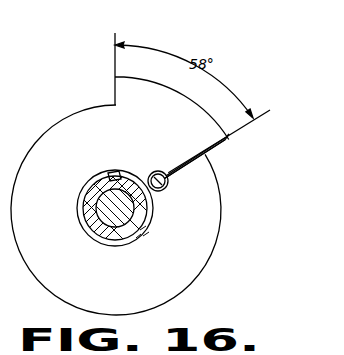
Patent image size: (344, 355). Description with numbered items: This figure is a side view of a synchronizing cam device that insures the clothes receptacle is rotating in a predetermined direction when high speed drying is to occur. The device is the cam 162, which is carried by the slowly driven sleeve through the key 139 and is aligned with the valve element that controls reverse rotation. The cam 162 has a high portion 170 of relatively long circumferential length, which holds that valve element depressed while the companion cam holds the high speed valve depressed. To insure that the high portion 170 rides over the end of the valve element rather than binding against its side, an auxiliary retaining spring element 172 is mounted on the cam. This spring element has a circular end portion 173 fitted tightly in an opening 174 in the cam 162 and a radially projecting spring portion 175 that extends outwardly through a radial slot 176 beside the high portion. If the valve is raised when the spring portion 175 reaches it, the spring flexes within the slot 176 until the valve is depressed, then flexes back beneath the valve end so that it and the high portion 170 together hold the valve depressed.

The cam 162 is at (202, 181).
The high portion 170 is at (171, 89).
The auxiliary retaining spring element 172 is at (229, 138).
The circular end portion 173 is at (167, 187).
The opening 174 is at (155, 171).
The radially projecting spring portion 175 is at (222, 144).
The radial slot 176 is at (201, 151).
The key 139 is at (113, 171).